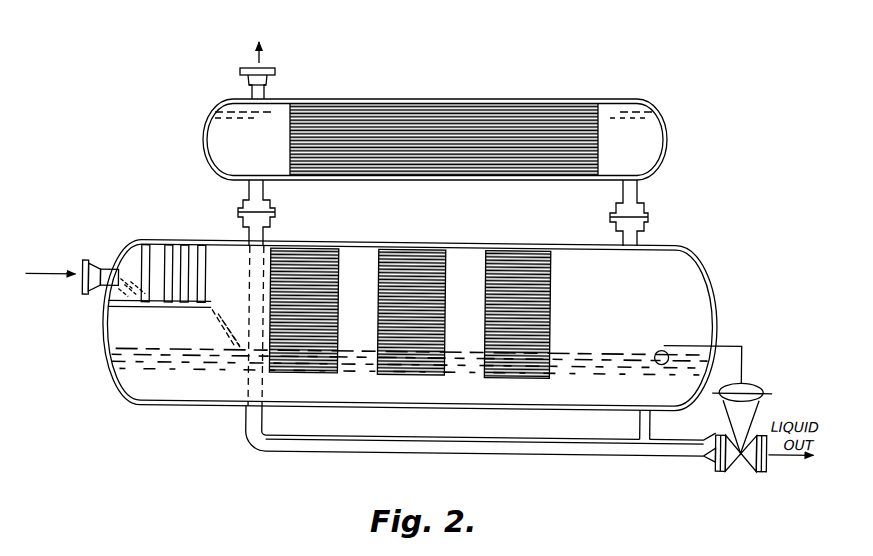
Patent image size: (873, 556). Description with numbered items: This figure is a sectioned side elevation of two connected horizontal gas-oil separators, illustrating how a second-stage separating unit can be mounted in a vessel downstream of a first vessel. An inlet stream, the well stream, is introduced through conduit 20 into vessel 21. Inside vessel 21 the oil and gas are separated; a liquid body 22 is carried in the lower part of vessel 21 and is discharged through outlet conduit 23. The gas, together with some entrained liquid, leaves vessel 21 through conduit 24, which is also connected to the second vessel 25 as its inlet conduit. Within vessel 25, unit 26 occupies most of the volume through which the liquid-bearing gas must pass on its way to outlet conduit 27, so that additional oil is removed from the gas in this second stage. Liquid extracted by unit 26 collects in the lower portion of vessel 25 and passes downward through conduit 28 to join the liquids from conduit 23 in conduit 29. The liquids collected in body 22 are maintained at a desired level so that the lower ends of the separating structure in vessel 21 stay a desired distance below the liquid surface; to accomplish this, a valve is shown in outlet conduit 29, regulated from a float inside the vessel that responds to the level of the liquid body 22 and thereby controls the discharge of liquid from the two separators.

The inlet conduit 20 is at (107, 262).
The vessel 21 is at (425, 243).
The liquid body 22 is at (465, 393).
The outlet conduit 23 is at (655, 428).
The outlet conduit 24 is at (638, 240).
The vessel 25 is at (392, 100).
The unit 26 is at (505, 112).
The outlet conduit 27 is at (268, 90).
The conduit 28 is at (265, 195).
The conduit 29 is at (656, 460).